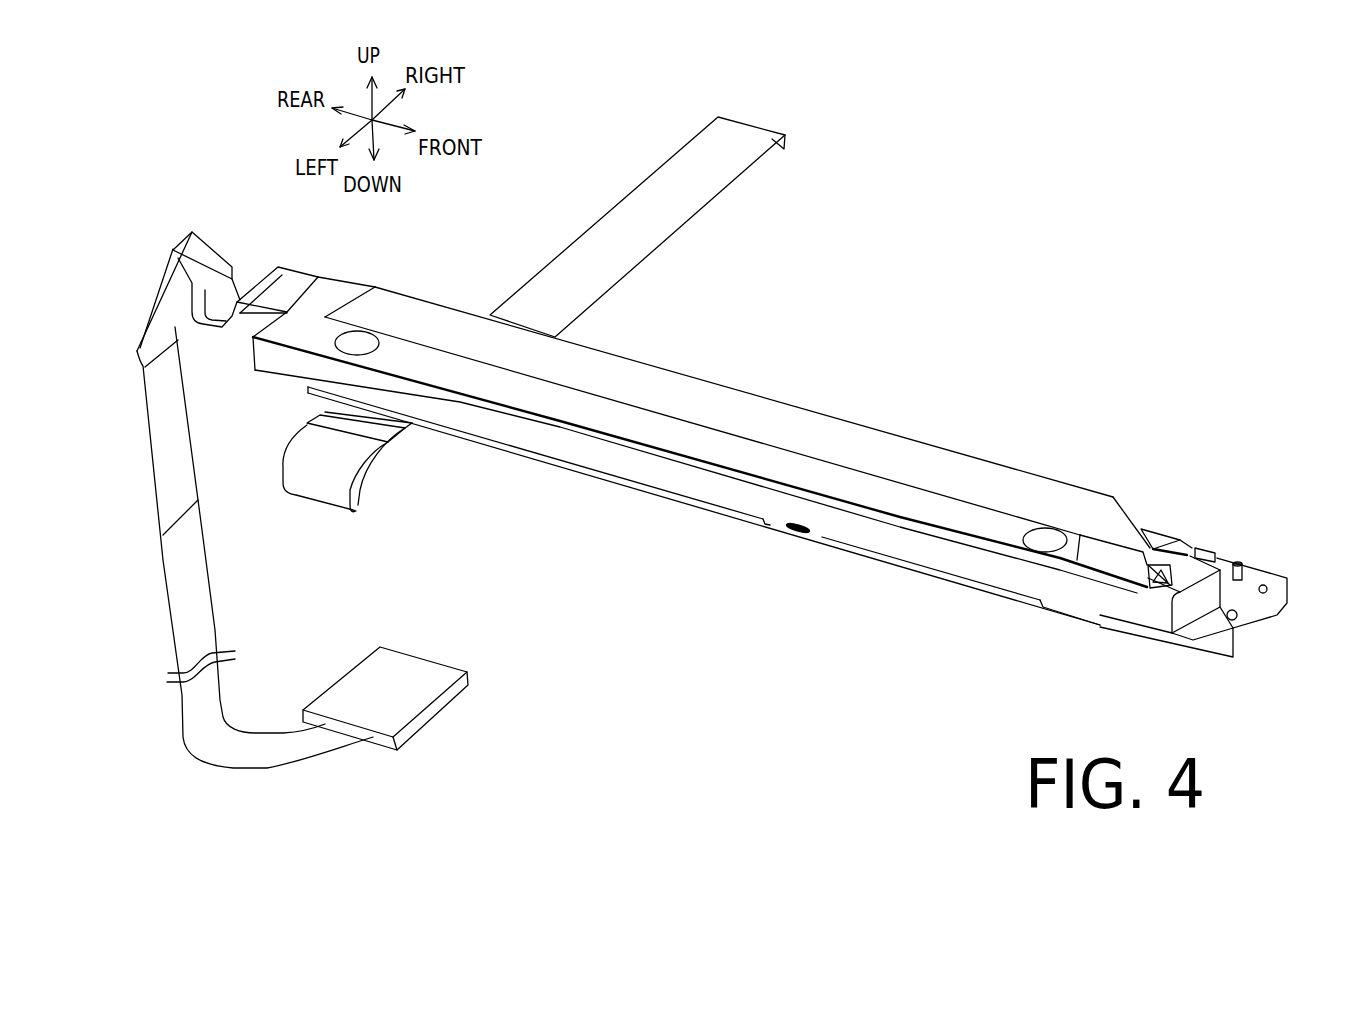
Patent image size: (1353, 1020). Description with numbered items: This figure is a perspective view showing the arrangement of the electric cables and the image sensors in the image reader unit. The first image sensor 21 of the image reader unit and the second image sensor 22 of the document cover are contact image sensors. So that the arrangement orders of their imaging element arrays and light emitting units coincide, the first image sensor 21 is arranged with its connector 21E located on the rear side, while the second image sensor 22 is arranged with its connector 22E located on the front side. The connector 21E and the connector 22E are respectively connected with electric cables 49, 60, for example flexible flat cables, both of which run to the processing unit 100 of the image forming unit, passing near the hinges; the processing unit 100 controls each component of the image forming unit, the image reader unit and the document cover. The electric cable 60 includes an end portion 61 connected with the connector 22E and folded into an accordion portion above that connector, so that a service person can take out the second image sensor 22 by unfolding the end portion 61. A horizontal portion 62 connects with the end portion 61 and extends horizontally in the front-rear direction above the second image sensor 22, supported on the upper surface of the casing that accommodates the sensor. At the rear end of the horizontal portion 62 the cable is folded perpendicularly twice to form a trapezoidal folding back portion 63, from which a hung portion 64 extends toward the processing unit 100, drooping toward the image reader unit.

The first image sensor 21 is at (1212, 637).
The connector 21E is at (420, 430).
The second image sensor 22 is at (708, 482).
The connector 22E is at (1168, 592).
The electric cable 49 is at (610, 205).
The electric cable 60 is at (903, 404).
The end portion 61 is at (1152, 532).
The horizontal portion 62 is at (985, 457).
The folding back portion 63 is at (205, 240).
The hung portion 64 is at (190, 543).
The processing unit 100 is at (412, 652).